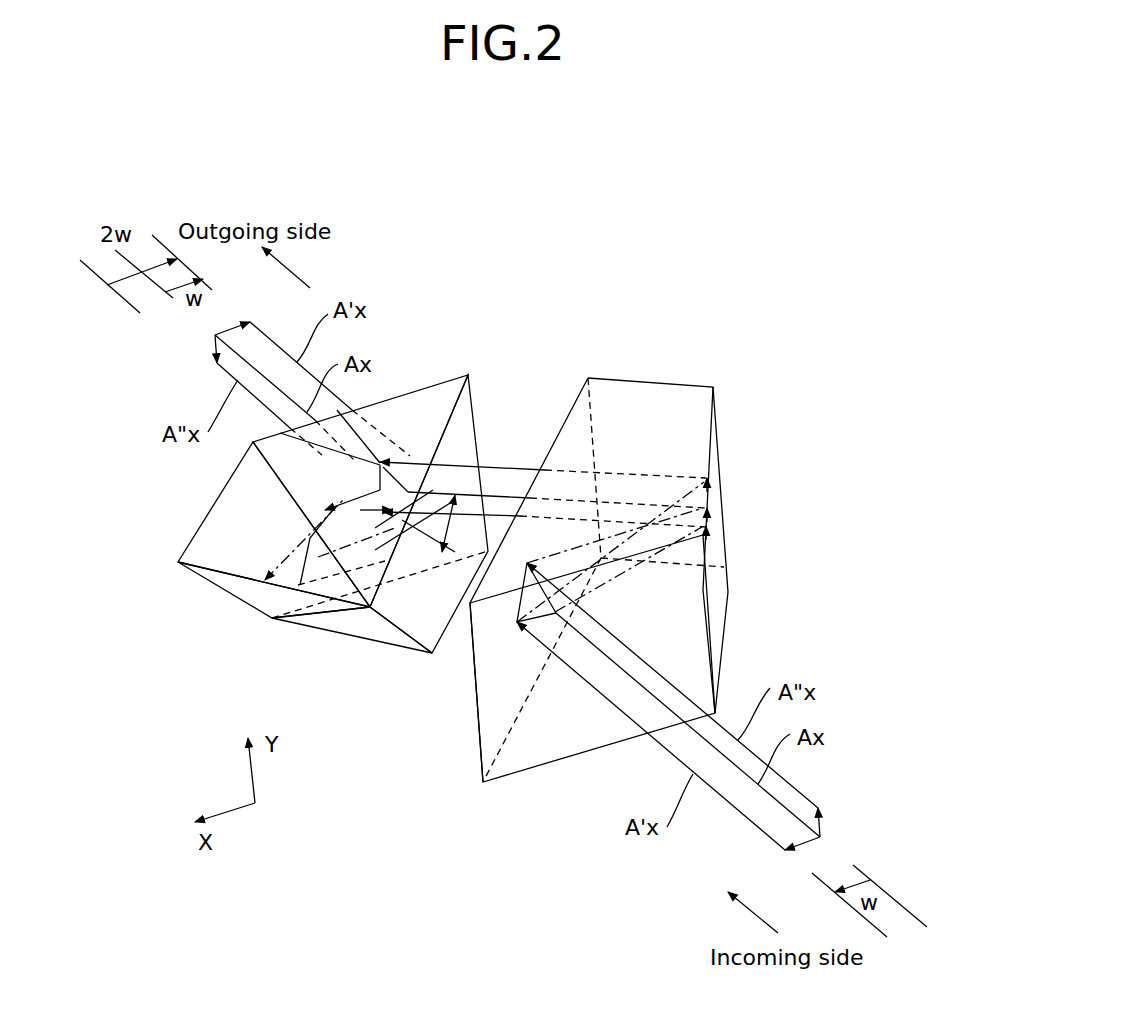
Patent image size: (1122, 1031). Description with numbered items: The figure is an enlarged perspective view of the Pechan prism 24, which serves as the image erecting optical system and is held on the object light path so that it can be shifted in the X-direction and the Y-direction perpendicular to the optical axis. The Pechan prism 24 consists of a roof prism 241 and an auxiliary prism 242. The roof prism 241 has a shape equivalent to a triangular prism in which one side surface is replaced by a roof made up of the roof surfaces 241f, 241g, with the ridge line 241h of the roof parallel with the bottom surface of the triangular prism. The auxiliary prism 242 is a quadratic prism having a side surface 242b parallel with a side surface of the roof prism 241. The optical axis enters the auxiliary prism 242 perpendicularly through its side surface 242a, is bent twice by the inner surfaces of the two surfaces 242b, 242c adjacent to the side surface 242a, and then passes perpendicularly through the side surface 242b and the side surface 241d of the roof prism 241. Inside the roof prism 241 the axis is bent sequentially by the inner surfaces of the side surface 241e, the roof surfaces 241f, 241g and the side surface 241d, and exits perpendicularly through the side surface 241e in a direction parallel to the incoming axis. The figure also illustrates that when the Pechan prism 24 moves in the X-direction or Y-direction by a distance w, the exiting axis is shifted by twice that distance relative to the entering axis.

The Pechan prism 24 is at (812, 245).
The roof prism 241 is at (456, 364).
The side surface of the roof prism 241d is at (463, 438).
The side surface of the roof prism 241e is at (412, 400).
The roof surface 241f is at (202, 547).
The roof surface 241g is at (362, 628).
The ridge line of the roof 241h is at (228, 580).
The auxiliary prism 242 is at (717, 413).
The side surface of the auxiliary prism 242a is at (562, 738).
The side surface of the auxiliary prism 242b is at (503, 670).
The side surface of the auxiliary prism 242c is at (727, 580).